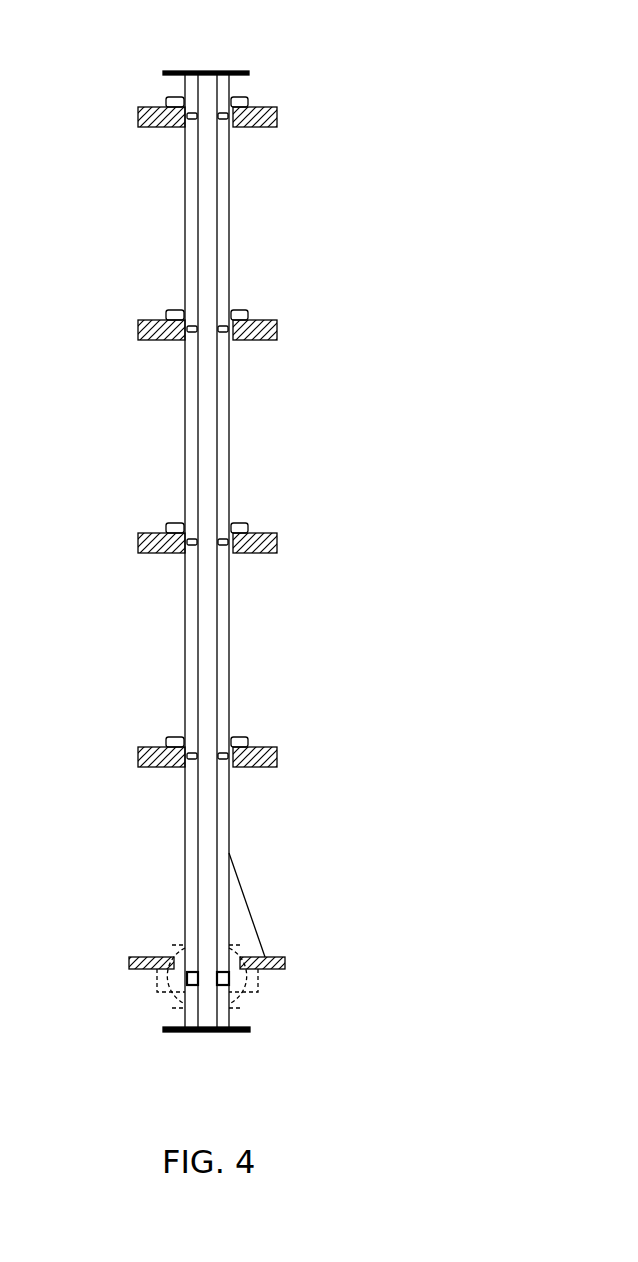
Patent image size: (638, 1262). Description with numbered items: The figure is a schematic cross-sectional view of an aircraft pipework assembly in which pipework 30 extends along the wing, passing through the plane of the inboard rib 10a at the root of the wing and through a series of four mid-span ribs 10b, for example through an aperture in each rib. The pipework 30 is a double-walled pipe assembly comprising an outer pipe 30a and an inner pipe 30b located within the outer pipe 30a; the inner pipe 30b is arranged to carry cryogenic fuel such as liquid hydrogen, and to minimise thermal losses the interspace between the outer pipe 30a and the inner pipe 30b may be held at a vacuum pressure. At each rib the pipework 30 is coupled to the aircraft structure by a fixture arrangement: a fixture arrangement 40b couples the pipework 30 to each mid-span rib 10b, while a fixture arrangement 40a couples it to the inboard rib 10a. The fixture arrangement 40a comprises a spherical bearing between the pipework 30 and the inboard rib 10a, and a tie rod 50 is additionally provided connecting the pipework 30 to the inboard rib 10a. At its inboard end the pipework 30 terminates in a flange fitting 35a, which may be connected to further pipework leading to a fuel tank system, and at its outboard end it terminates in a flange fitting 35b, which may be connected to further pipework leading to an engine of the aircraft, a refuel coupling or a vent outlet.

The pipework 30 is at (212, 551).
The outer pipe 30a is at (232, 412).
The inner pipe 30b is at (198, 468).
The flange fitting 35a is at (205, 1032).
The flange fitting 35b is at (210, 71).
The inboard rib 10a is at (150, 970).
The mid-span ribs 10b is at (152, 127).
The fixture arrangement 40a is at (268, 982).
The fixture arrangement 40b is at (248, 100).
The tie rod 50 is at (256, 920).